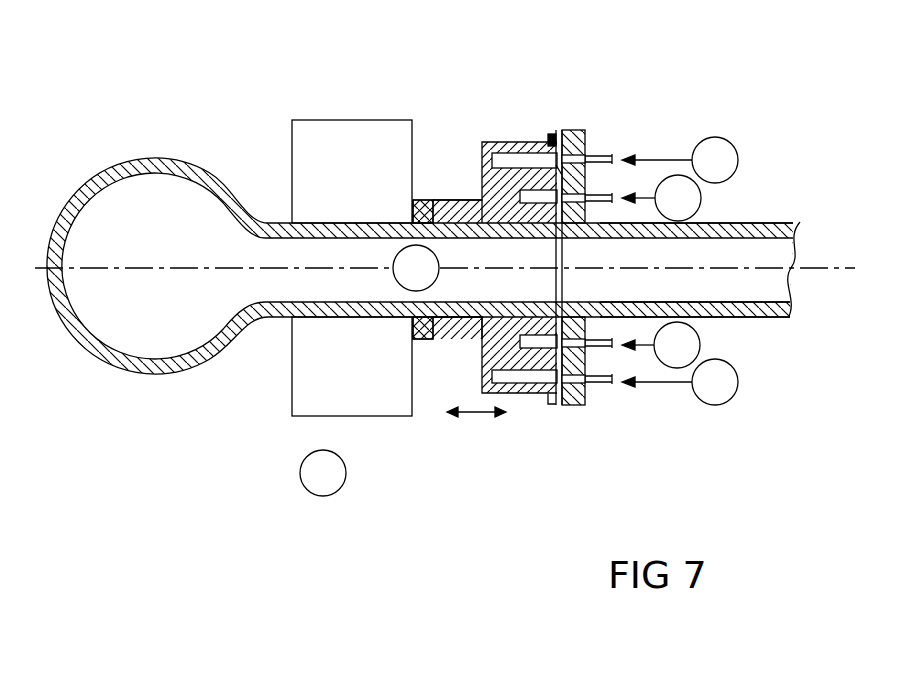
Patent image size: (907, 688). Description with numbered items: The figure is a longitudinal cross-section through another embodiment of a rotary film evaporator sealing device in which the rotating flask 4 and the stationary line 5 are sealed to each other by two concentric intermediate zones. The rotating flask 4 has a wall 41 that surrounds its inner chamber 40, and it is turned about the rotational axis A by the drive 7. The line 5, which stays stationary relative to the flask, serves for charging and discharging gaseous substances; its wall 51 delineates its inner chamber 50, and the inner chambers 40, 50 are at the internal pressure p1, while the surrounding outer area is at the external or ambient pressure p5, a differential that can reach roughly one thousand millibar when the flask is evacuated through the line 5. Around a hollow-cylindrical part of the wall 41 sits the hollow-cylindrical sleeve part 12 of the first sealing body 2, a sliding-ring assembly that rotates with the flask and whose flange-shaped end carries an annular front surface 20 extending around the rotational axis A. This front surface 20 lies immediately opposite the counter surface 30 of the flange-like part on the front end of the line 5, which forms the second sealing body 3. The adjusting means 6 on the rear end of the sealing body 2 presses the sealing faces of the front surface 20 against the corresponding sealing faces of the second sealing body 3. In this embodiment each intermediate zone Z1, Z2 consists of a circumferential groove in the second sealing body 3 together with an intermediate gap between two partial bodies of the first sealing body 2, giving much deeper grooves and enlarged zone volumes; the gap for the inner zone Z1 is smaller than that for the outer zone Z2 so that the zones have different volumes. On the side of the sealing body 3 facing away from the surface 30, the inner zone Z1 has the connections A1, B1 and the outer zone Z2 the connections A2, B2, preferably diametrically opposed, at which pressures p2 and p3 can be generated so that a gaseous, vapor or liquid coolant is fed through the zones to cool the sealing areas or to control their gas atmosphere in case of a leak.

The first sealing body 2 is at (524, 223).
The second sealing body 3 is at (586, 317).
The rotating flask 4 is at (204, 174).
The line 5 is at (848, 350).
The adjusting means 6 is at (429, 200).
The drive 7 is at (310, 128).
The sleeve part 12 is at (481, 216).
The front surface 20 is at (560, 220).
The surface 30 is at (556, 402).
The inner chamber 40 is at (140, 202).
The wall 41 is at (362, 313).
The inner chamber 50 is at (792, 262).
The wall 51 is at (750, 236).
The rotational axis A is at (218, 268).
The connection A1 is at (600, 198).
The connection A2 is at (586, 154).
The connection B1 is at (585, 382).
The connection B2 is at (585, 343).
The inner intermediate zone Z1 is at (541, 200).
The outer intermediate zone Z2 is at (556, 165).
The internal pressure p1 is at (416, 268).
The pressure p2 is at (661, 271).
The pressure p3 is at (680, 271).
The external pressure p5 is at (323, 473).